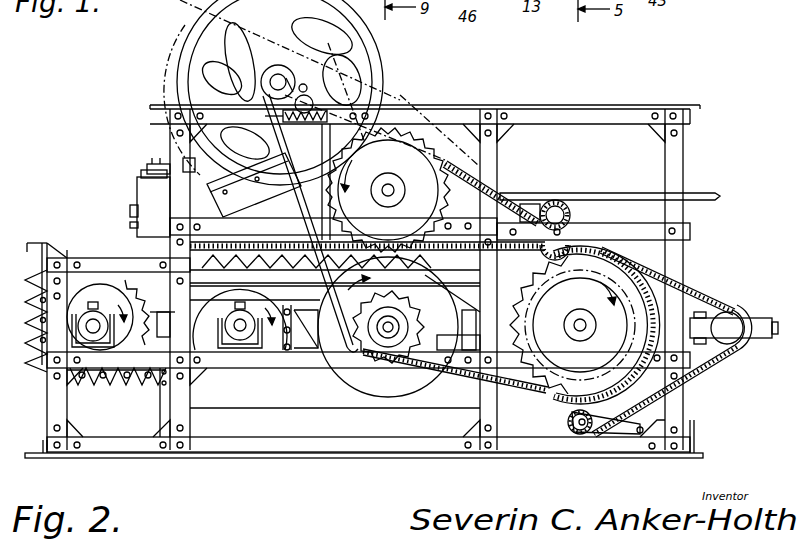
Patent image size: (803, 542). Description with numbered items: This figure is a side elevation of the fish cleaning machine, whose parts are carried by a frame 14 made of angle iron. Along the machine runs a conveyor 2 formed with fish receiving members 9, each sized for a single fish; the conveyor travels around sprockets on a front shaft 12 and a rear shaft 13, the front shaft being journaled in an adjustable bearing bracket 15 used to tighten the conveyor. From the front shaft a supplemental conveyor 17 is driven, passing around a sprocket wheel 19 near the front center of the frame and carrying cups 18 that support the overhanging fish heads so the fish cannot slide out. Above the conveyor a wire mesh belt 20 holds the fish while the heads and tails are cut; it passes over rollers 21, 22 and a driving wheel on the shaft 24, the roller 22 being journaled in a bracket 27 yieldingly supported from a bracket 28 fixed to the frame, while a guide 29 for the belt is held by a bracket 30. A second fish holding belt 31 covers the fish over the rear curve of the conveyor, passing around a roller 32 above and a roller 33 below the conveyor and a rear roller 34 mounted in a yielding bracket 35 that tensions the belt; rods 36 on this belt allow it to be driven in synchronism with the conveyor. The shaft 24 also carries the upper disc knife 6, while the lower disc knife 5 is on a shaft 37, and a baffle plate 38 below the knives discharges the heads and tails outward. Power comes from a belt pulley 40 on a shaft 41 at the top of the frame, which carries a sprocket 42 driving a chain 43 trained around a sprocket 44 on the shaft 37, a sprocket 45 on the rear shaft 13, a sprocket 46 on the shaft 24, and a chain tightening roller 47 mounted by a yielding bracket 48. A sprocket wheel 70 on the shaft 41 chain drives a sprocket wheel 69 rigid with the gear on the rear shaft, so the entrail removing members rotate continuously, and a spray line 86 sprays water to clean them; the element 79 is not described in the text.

The conveyor 2 is at (128, 390).
The disc knife 5 is at (423, 382).
The disc knife 6 is at (420, 130).
The fish receiving member 9 is at (214, 262).
The shaft 12 is at (93, 345).
The shaft 13 is at (578, 327).
The frame 14 is at (684, 166).
The adjustable bearing bracket 15 is at (48, 352).
The supplemental conveyor 17 is at (292, 352).
The holding member 18 is at (296, 306).
The sprocket wheel 19 is at (203, 345).
The belt 20 is at (443, 157).
The roller 21 is at (530, 204).
The roller 22 is at (150, 172).
The shaft 24 is at (388, 186).
The bracket 27 is at (137, 215).
The bracket 28 is at (136, 192).
The guide 29 is at (262, 185).
The bracket 30 is at (185, 165).
The fish holding belt 31 is at (706, 366).
The roller 32 is at (573, 202).
The roller 33 is at (578, 436).
The rear roller 34 is at (740, 340).
The bracket 35 is at (753, 318).
The rod 36 is at (665, 252).
The shaft 37 is at (384, 345).
The baffle plate 38 is at (253, 403).
The belt pulley 40 is at (373, 49).
The shaft 41 is at (274, 78).
The sprocket 42 is at (297, 88).
The driving chain 43 is at (328, 340).
The sprocket 44 is at (402, 300).
The sprocket 45 is at (535, 365).
The sprocket 46 is at (463, 177).
The chain tightening roller 47 is at (308, 104).
The bracket 48 is at (245, 143).
The sprocket wheel 69 is at (612, 370).
The sprocket wheel 70 is at (185, 28).
The wheel 79 is at (505, 306).
The spray line 86 is at (608, 192).